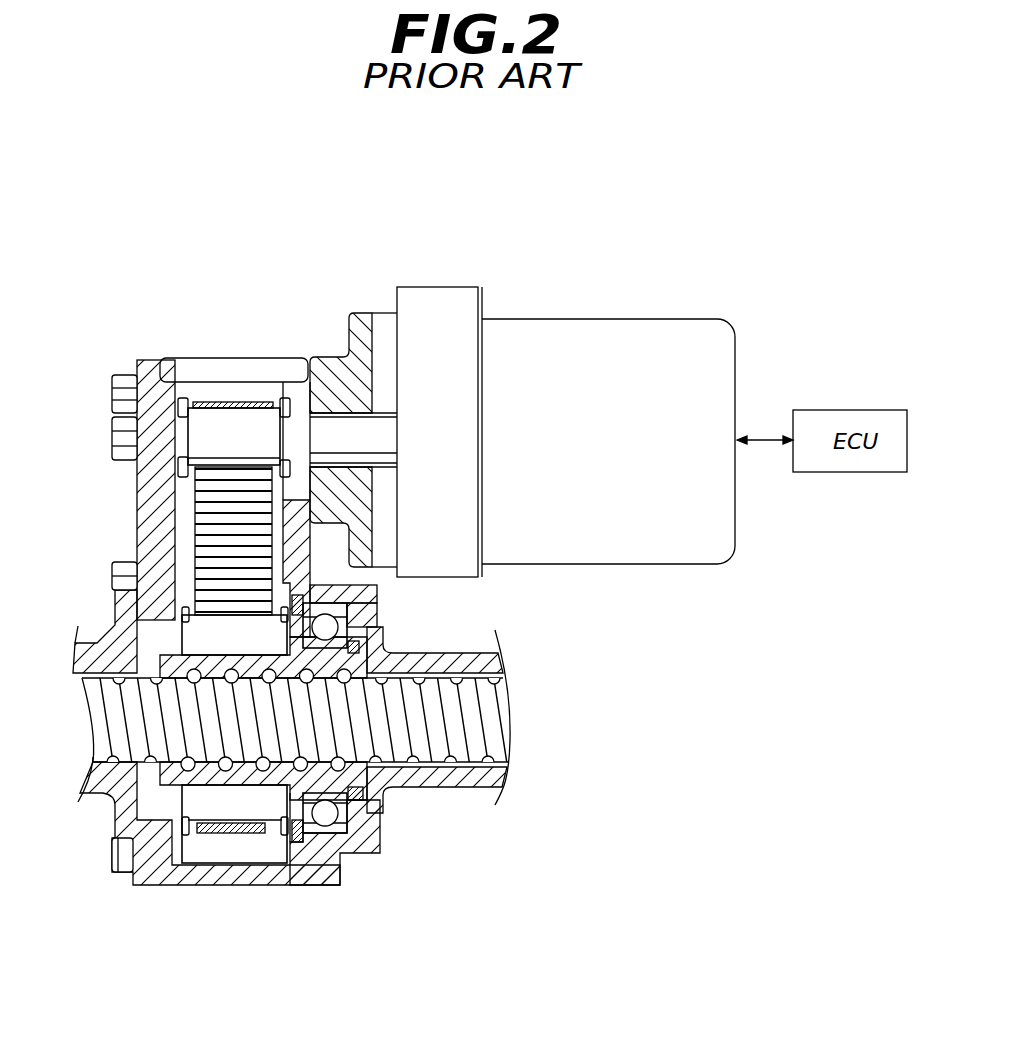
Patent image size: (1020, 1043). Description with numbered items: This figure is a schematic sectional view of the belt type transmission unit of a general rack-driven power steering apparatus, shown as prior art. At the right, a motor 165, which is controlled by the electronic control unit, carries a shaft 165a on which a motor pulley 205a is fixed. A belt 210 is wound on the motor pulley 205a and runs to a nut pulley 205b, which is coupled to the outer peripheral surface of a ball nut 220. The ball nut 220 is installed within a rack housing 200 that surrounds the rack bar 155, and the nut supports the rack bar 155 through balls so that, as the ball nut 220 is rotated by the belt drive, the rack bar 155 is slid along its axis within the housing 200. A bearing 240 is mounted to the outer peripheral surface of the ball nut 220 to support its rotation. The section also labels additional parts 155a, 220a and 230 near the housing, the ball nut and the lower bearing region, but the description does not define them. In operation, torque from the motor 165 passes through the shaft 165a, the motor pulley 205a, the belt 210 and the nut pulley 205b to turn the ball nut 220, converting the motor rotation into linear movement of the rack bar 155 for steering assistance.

The rack bar 155 is at (105, 725).
The housing 155a is at (447, 742).
The motor 165 is at (605, 333).
The shaft of the motor 165a is at (338, 427).
The rack housing 200 is at (233, 880).
The motor pulley 205a is at (235, 423).
The nut pulley 205b is at (217, 812).
The belt 210 is at (200, 530).
The ball nut 220 is at (197, 660).
The nut flange 220a is at (305, 810).
The lower bearing 230 is at (378, 822).
The bearing 240 is at (327, 628).